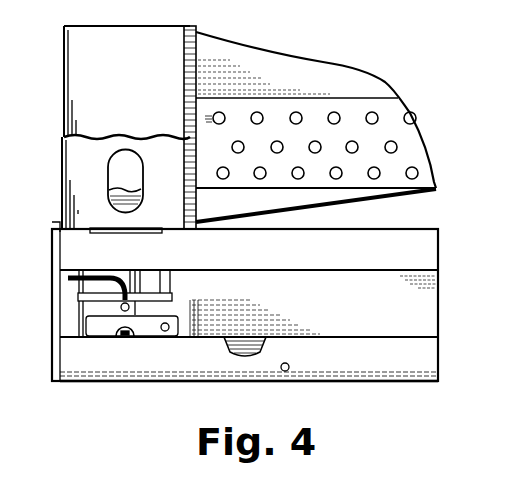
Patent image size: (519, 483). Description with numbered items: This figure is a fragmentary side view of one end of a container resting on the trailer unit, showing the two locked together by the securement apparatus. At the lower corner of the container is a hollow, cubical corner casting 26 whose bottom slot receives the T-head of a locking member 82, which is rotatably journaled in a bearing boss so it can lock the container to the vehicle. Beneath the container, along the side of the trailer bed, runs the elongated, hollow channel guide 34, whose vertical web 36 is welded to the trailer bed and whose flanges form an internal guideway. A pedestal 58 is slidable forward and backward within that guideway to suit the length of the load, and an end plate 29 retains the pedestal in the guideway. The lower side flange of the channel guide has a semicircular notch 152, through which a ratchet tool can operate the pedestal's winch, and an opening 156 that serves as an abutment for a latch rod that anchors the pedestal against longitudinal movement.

The corner casting 26 is at (64, 152).
The locking member 82 is at (137, 196).
The end plate 29 is at (52, 323).
The vertical web 36 is at (420, 307).
The pedestal 58 is at (148, 330).
The channel guide 34 is at (118, 384).
The notch 152 is at (247, 350).
The opening 156 is at (290, 367).